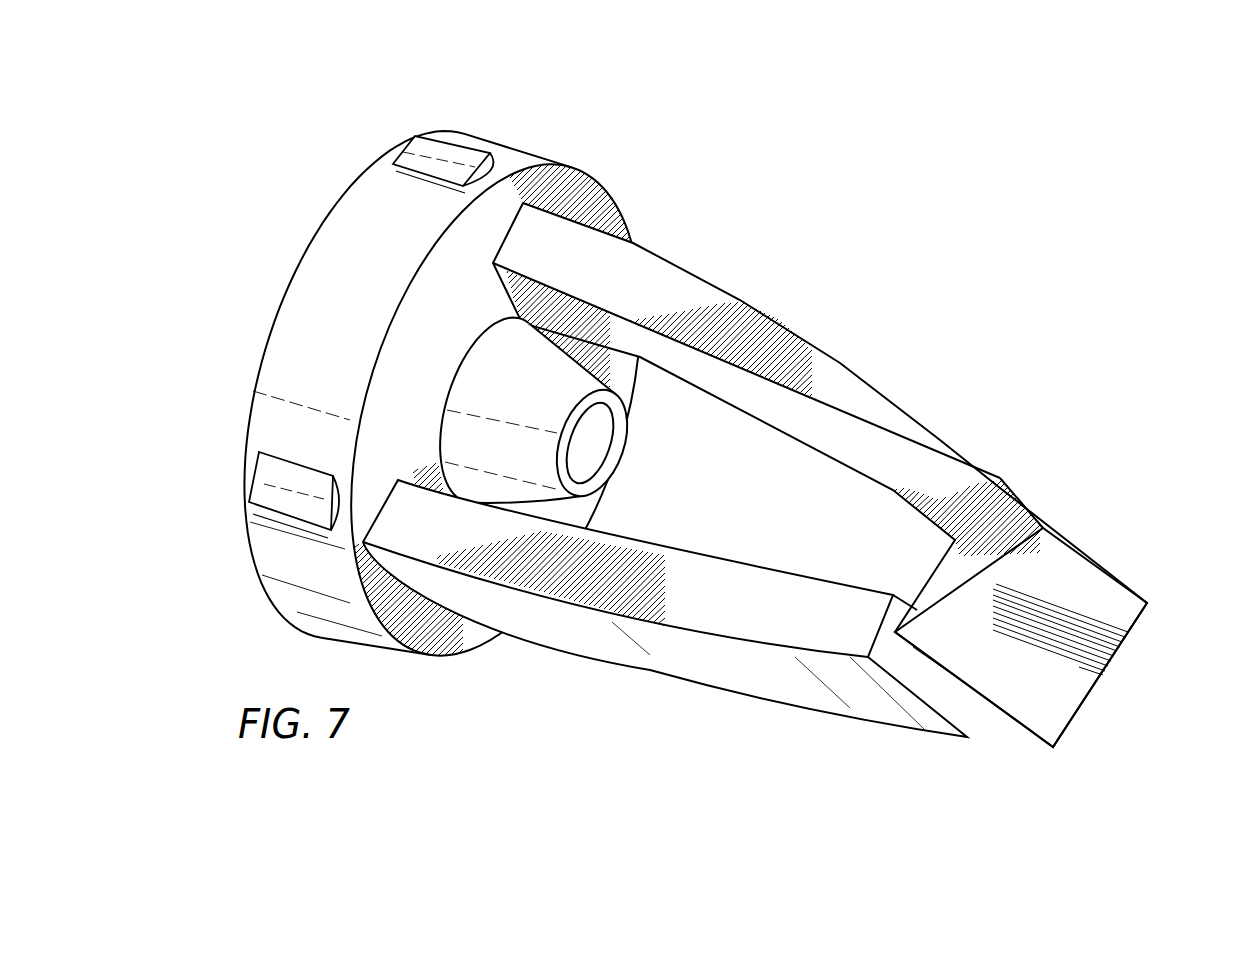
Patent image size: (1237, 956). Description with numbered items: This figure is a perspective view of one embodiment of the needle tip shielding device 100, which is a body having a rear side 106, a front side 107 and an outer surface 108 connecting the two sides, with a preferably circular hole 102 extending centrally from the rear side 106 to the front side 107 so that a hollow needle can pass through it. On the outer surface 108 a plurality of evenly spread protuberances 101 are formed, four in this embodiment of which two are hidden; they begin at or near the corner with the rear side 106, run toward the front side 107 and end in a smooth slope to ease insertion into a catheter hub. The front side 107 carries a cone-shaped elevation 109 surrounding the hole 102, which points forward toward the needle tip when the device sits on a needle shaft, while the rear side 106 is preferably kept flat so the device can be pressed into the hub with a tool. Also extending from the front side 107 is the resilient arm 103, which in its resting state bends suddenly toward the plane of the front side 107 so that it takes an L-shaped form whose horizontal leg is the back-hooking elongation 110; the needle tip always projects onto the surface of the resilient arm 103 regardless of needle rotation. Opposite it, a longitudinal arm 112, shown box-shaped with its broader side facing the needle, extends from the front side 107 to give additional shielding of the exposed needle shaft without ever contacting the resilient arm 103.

The needle tip shielding device 100 is at (674, 410).
The protuberance 101 is at (418, 152).
The hole 102 is at (593, 435).
The resilient arm 103 is at (846, 475).
The rear side 106 is at (440, 382).
The front side 107 is at (590, 200).
The outer surface 108 is at (290, 353).
The cone-shaped elevation 109 is at (553, 423).
The back-hooking elongation 110 is at (1057, 633).
The longitudinal arm 112 is at (728, 662).